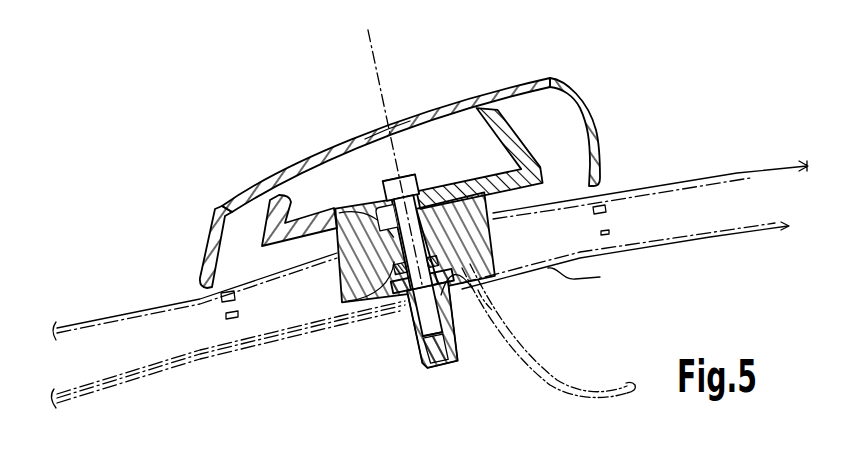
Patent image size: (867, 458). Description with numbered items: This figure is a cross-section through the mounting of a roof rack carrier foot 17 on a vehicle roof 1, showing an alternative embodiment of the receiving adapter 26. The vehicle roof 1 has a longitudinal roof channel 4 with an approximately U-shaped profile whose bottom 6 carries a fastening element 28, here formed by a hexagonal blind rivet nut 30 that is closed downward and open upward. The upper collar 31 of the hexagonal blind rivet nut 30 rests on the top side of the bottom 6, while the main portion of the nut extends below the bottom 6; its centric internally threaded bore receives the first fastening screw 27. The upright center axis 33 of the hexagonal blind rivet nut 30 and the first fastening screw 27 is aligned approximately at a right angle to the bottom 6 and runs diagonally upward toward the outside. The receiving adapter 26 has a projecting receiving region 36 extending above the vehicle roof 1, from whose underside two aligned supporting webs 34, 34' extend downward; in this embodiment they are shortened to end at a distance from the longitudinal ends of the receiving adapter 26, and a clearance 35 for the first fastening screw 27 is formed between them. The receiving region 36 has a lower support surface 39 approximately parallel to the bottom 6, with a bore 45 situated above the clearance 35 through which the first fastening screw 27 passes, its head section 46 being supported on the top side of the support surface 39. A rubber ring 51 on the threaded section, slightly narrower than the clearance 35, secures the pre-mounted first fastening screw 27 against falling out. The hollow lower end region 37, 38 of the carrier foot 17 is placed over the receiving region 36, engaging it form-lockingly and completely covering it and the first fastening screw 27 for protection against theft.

The vehicle roof 1 is at (735, 165).
The roof channel 4 is at (625, 239).
The bottom 6 is at (503, 329).
The carrier foot 17 is at (536, 72).
The receiving adapter 26 is at (336, 280).
The first fastening screw 27 is at (287, 220).
The fastening element 28 is at (407, 341).
The hexagonal blind rivet nut 30 is at (439, 366).
The upper collar 31 is at (462, 292).
The center axis 33 is at (376, 70).
The supporting web 34 is at (228, 354).
The supporting web 34' is at (539, 294).
The clearance 35 is at (430, 233).
The projecting receiving region 36 is at (461, 177).
The hollow lower end region 37 is at (420, 176).
The hollow lower end region 38 is at (376, 205).
The support surface 39 is at (290, 178).
The bore 45 is at (387, 147).
The head section 46 is at (407, 163).
The rubber ring 51 is at (385, 288).